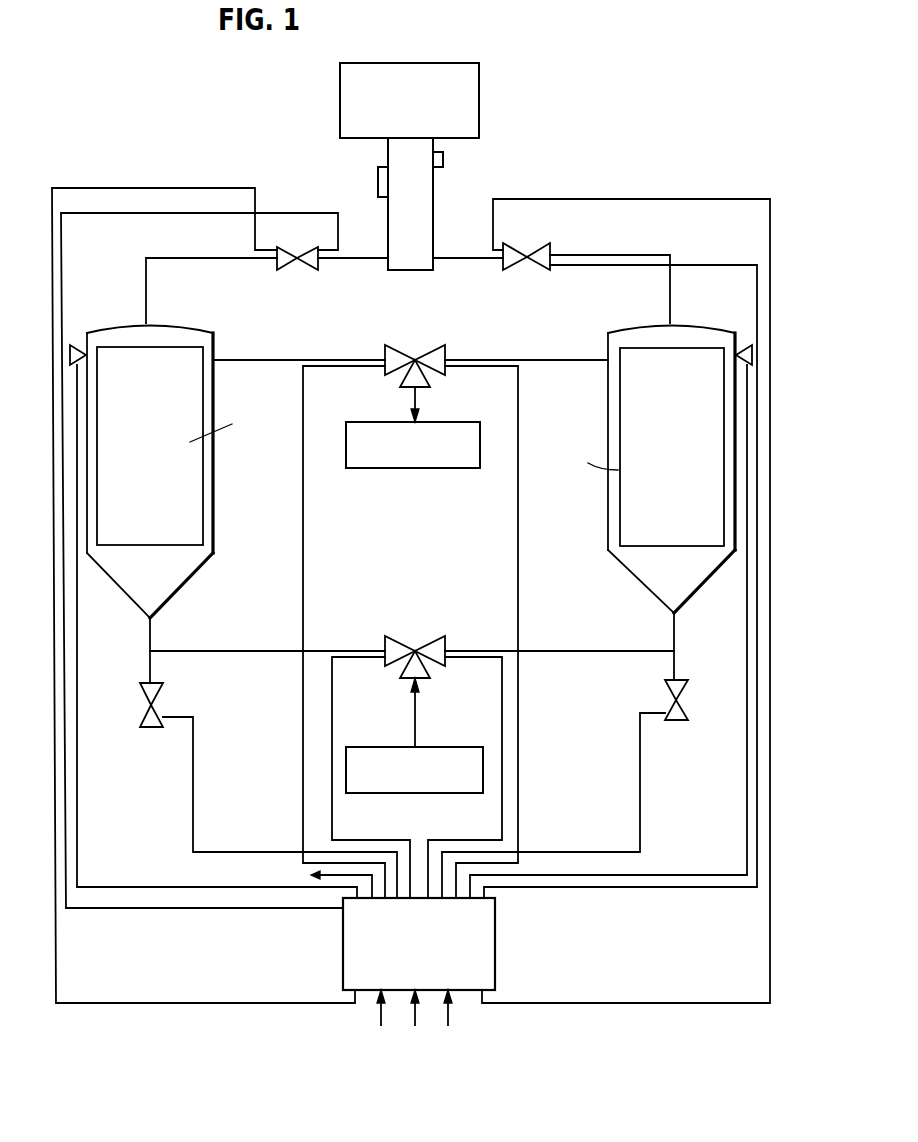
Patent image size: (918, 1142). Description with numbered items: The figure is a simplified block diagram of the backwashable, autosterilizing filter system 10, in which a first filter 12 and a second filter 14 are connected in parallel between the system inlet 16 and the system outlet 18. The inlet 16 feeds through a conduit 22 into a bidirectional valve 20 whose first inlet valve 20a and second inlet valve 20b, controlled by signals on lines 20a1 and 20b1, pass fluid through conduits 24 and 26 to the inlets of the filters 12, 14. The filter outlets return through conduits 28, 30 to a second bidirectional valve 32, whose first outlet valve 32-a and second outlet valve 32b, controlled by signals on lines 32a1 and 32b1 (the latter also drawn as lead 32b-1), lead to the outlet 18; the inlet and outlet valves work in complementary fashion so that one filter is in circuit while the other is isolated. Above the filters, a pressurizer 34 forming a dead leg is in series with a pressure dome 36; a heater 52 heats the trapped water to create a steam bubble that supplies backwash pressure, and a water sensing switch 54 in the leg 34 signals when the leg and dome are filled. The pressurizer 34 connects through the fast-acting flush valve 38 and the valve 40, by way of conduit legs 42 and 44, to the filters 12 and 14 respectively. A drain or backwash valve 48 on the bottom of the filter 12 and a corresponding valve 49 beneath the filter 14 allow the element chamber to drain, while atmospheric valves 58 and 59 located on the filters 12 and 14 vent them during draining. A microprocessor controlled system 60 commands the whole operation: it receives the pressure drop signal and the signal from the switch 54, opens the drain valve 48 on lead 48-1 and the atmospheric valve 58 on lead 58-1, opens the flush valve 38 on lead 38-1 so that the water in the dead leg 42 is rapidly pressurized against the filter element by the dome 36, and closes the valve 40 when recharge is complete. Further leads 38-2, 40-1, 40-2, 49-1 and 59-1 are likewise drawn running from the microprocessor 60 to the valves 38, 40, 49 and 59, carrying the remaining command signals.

The system 10 is at (154, 196).
The first filter 12 is at (208, 497).
The second filter 14 is at (608, 512).
The system inlet 16 is at (483, 770).
The system outlet 18 is at (432, 468).
The bidirectional valve 20 is at (421, 635).
The first inlet valve 20a is at (400, 638).
The second inlet valve 20b is at (448, 640).
The line 20a1 is at (332, 680).
The line 20b1 is at (502, 677).
The conduit 22 is at (418, 708).
The conduit 24 is at (228, 650).
The conduit 26 is at (585, 650).
The conduit 28 is at (250, 358).
The conduit 30 is at (540, 362).
The bidirectional valve 32 is at (426, 345).
The first outlet valve 32-a is at (395, 352).
The second outlet valve 32b is at (448, 345).
The line 32a1 is at (362, 366).
The line 32b1 is at (498, 370).
The line 32b-1 is at (477, 863).
The pressurizer 34 is at (433, 213).
The pressure dome 36 is at (479, 100).
The flush valve 38 is at (305, 270).
The lead 38-1 is at (328, 265).
The valve 38 control line 38-2 is at (205, 188).
The valve 40 is at (527, 270).
The valve 40 control line 40-1 is at (683, 265).
The valve 40 control line 40-2 is at (568, 199).
The conduit leg 42 is at (222, 258).
The conduit leg 44 is at (640, 255).
The backwash valve 48 is at (140, 717).
The lead 48-1 is at (193, 770).
The valve 49 is at (688, 713).
The drain valve D control line 49-1 is at (641, 752).
The heater 52 is at (378, 182).
The water sensing switch 54 is at (443, 158).
The atmospheric valve 58 is at (75, 343).
The lead 58-1 is at (77, 398).
The atmospheric valve 59 is at (742, 345).
The pressure sensor signal line 59-1 is at (745, 393).
The microprocessor controlled system 60 is at (495, 955).